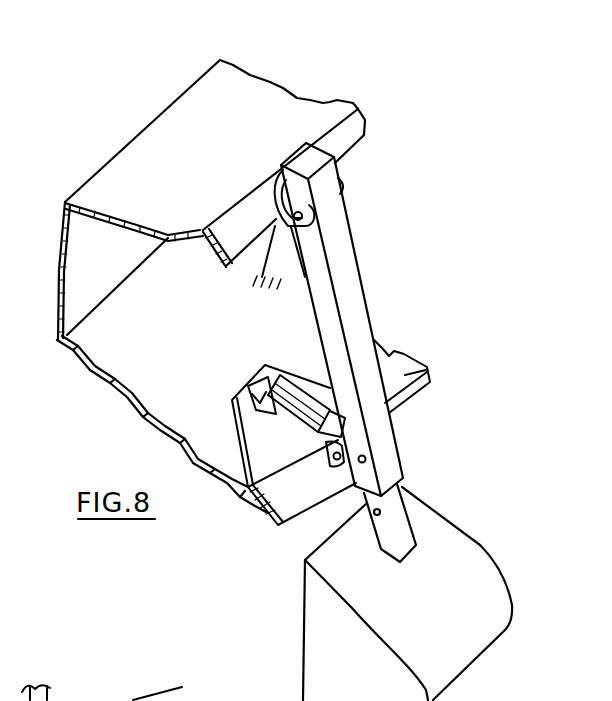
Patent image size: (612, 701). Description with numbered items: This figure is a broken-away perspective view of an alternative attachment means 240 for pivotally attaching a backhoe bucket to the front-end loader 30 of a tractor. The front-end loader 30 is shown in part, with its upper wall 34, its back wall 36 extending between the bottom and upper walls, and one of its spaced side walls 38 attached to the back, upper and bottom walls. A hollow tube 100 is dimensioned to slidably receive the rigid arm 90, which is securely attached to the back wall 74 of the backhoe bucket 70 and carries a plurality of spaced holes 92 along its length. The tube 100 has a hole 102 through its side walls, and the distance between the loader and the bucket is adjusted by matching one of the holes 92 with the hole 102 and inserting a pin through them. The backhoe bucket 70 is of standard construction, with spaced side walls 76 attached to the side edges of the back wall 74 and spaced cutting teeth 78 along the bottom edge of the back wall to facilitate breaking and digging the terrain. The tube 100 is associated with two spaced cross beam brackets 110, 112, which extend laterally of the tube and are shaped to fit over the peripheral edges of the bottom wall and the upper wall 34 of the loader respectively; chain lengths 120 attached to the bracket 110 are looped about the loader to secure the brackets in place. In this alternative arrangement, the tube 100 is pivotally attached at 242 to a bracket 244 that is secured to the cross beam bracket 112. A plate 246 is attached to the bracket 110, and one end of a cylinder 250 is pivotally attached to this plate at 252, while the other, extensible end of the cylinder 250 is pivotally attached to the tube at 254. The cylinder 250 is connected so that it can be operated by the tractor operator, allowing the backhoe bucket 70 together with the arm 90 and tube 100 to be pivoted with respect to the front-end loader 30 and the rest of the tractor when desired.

The front-end loader 30 is at (272, 81).
The upper wall 34 is at (233, 125).
The back wall 36 is at (105, 274).
The side walls 38 is at (153, 334).
The cross beam bracket 112 is at (233, 212).
The alternative attachment means 240 is at (447, 187).
The pivotal attachment 242 is at (320, 238).
The bracket 244 is at (300, 262).
The plate 246 is at (238, 436).
The cylinder 250 is at (303, 398).
The pivotal attachment 252 is at (258, 397).
The pivotal attachment 254 is at (340, 470).
The hollow tube 100 is at (365, 284).
The cross beam bracket 110 is at (428, 366).
The hole 102 is at (402, 463).
The rigid arm 90 is at (406, 498).
The holes 92 is at (376, 516).
The backhoe bucket 70 is at (481, 545).
The back wall 74 is at (462, 618).
The side walls 76 is at (365, 671).
The cutting teeth 78 is at (300, 698).
The chain lengths 120 is at (72, 700).